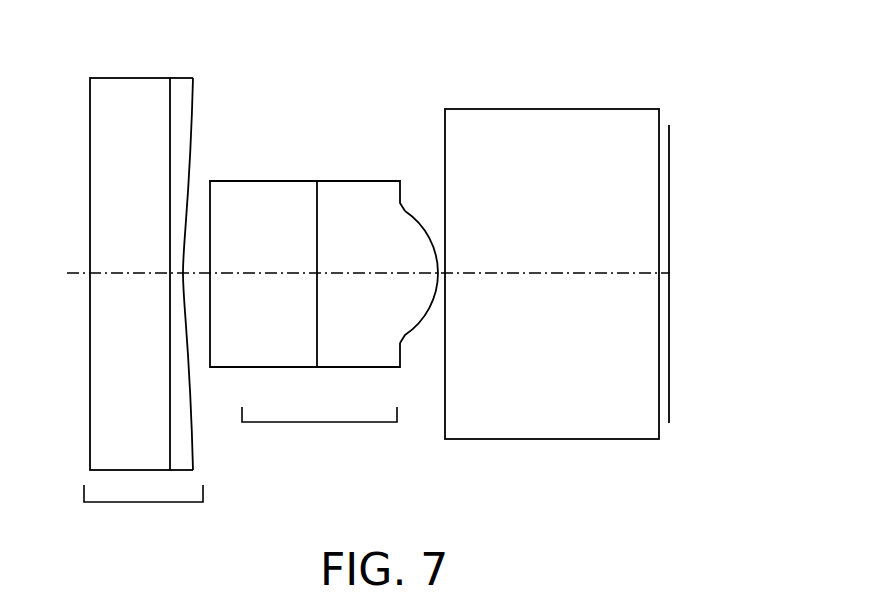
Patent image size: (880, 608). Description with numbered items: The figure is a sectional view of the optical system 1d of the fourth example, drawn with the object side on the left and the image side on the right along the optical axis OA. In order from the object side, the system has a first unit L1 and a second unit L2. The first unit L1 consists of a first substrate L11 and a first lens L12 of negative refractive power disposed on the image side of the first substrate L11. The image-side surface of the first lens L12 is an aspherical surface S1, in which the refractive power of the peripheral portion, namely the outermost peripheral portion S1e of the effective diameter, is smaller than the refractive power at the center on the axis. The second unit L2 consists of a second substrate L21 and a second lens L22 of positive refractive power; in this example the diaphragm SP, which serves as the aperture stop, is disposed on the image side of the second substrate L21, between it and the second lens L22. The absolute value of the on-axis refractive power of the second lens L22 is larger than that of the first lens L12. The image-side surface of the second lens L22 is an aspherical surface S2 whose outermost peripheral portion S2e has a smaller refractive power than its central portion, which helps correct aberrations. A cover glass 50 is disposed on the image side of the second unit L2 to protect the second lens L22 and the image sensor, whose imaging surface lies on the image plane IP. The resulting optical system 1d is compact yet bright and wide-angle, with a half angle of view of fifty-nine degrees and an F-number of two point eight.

The optical system 1d is at (750, 47).
The optical axis OA is at (79, 275).
The first unit L1 is at (162, 282).
The first substrate L11 is at (118, 82).
The first lens L12 is at (193, 78).
The aspherical surface S1 is at (190, 192).
The outermost peripheral portion S1e is at (193, 383).
The second unit L2 is at (325, 258).
The second substrate L21 is at (266, 190).
The diaphragm SP is at (316, 193).
The second lens L22 is at (371, 193).
The aspherical surface S2 is at (415, 217).
The outermost peripheral portion S2e is at (402, 344).
The cover glass 50 is at (498, 413).
The image plane IP is at (671, 163).